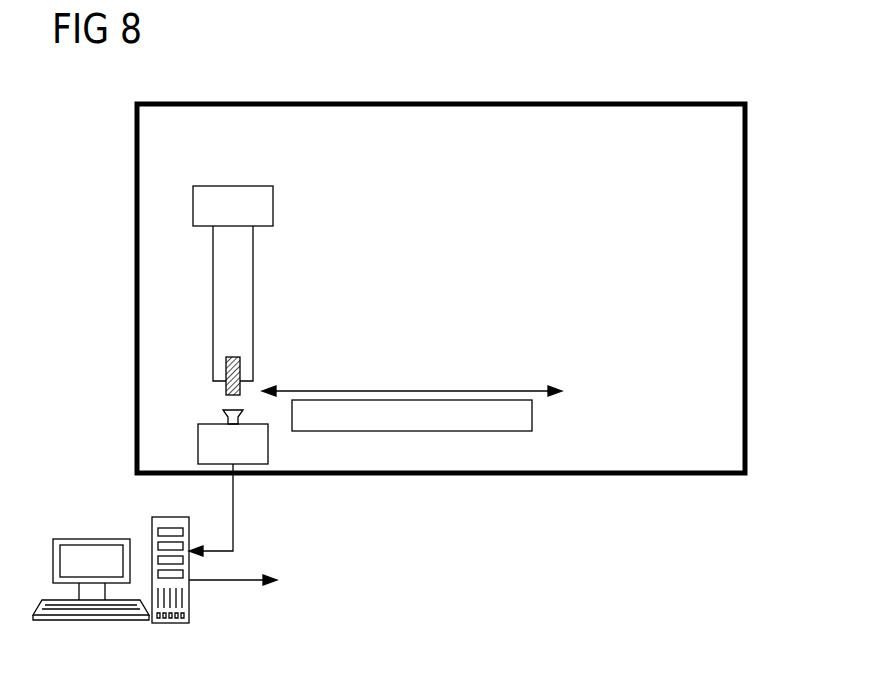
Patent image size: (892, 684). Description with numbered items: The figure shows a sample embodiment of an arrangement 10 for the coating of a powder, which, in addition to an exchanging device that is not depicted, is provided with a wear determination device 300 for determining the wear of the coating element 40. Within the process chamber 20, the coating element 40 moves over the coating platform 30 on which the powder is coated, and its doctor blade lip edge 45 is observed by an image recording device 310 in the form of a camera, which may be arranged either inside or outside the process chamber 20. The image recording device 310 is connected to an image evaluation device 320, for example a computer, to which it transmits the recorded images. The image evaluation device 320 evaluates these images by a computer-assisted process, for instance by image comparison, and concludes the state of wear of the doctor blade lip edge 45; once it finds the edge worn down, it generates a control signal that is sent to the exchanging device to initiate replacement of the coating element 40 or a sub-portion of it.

The arrangement 10 is at (651, 95).
The process chamber 20 is at (417, 103).
The coating platform 30 is at (495, 421).
The coating element 40 is at (226, 370).
The doctor blade lip edge 45 is at (226, 401).
The wear determination device 300 is at (297, 493).
The image recording device 310 is at (206, 446).
The image evaluation device 320 is at (92, 548).